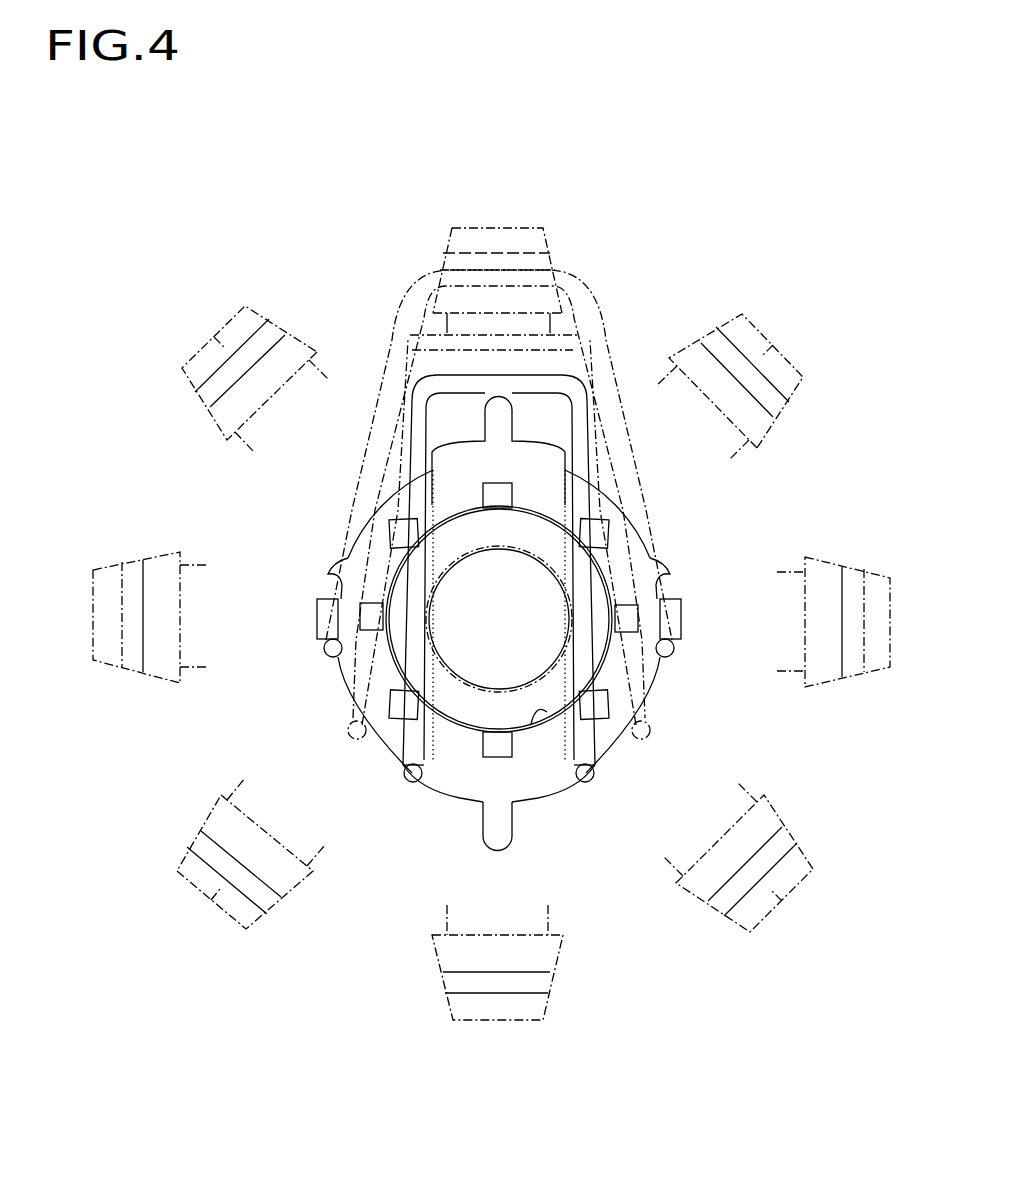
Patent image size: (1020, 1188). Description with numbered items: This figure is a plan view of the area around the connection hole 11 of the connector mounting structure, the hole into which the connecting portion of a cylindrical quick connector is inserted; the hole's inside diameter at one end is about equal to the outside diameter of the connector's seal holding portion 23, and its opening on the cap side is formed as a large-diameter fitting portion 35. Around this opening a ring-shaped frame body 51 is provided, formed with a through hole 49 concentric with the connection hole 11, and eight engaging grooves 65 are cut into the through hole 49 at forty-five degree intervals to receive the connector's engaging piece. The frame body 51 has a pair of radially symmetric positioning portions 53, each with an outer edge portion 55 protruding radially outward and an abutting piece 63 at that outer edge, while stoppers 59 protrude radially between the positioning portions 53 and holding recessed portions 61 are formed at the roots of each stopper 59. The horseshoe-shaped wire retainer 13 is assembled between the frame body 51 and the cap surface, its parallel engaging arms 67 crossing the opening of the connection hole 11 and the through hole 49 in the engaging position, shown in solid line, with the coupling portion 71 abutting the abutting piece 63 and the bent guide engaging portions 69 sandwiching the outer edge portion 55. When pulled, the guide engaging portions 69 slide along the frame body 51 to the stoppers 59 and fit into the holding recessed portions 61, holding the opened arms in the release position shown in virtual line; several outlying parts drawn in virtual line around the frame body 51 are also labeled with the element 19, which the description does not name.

The connection hole 11 is at (517, 557).
The wire retainer 13 is at (417, 367).
The terminal 19 is at (214, 337).
The seal holding portion 23 is at (498, 547).
The fitting portion 35 is at (453, 540).
The through hole 49 is at (541, 718).
The frame body 51 is at (660, 521).
The positioning portion 53 is at (473, 477).
The outer edge portion 55 is at (513, 383).
The stopper 59 is at (318, 602).
The holding recessed portion 61 is at (328, 574).
The abutting piece 63 is at (495, 410).
The engaging groove 65 is at (380, 607).
The engaging arm 67 is at (415, 447).
The guide engaging portion 69 is at (404, 771).
The coupling portion 71 is at (528, 447).